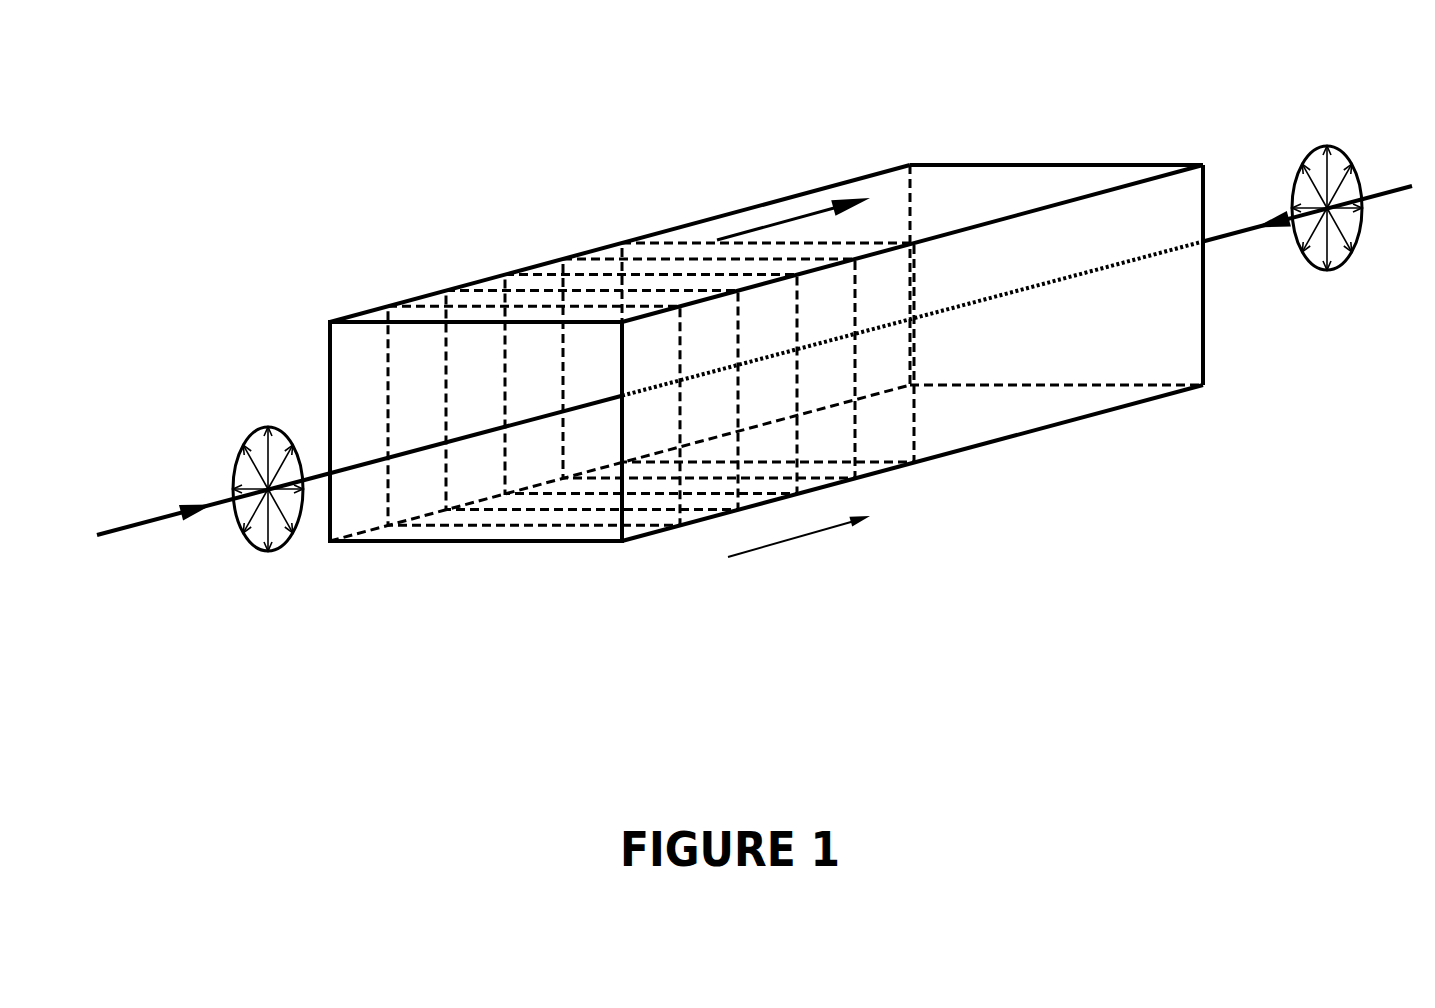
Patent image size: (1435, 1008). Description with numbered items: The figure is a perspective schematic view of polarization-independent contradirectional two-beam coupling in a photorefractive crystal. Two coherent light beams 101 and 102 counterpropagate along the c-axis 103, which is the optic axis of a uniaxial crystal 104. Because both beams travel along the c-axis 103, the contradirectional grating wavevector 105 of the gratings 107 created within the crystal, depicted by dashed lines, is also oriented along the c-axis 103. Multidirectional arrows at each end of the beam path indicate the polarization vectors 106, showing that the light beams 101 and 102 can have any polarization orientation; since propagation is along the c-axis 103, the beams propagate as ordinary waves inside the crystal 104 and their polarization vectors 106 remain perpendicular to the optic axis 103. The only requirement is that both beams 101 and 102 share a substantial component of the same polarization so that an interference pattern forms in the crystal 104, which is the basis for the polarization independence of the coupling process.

The coherent light beam 101 is at (140, 525).
The coherent light beam 102 is at (1382, 186).
The c-axis 103 is at (800, 537).
The uniaxial crystal 104 is at (1067, 422).
The contradirectional grating wavevector 105 is at (767, 222).
The polarization vectors 106 is at (253, 438).
The gratings 107 is at (643, 238).